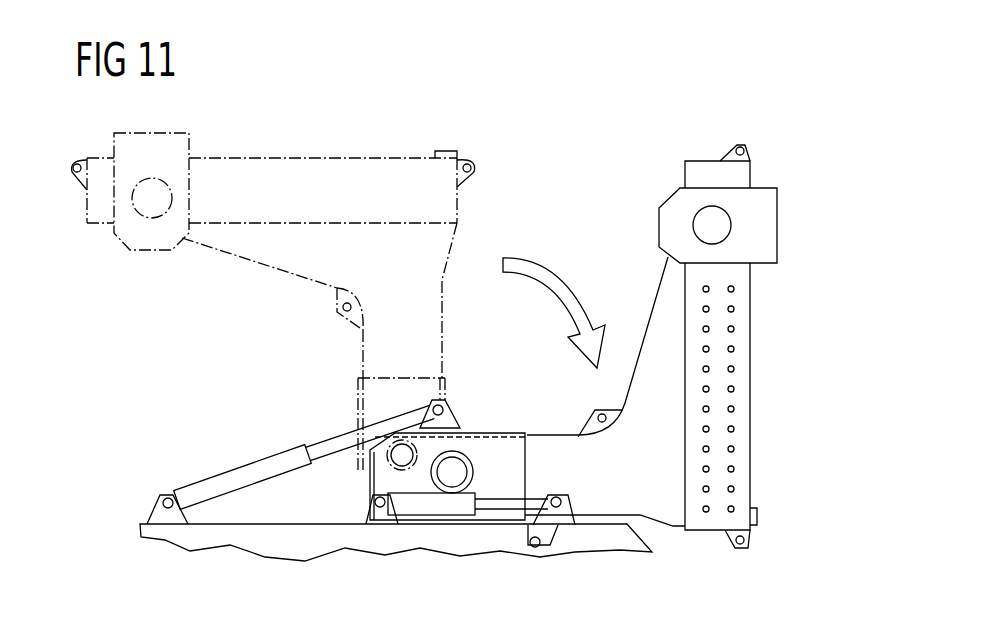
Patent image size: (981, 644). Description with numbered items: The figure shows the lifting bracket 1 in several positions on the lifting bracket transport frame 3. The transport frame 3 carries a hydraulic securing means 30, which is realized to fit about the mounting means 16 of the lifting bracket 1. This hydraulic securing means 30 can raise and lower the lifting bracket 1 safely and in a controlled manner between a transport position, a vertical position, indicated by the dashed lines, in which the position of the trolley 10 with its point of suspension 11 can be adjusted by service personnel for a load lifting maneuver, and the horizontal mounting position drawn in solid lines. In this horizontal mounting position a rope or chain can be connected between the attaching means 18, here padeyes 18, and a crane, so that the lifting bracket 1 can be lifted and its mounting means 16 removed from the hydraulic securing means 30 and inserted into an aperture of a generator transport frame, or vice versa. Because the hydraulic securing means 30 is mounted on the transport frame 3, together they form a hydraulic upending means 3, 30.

The lifting bracket 1 is at (750, 380).
The lifting bracket transport frame 3 is at (280, 535).
The lifting angle adjusting means 10 is at (765, 222).
The point of suspension 11 is at (705, 225).
The mounting means 16 is at (660, 502).
The attaching means 18 is at (596, 413).
The hydraulic securing means 30 is at (495, 482).